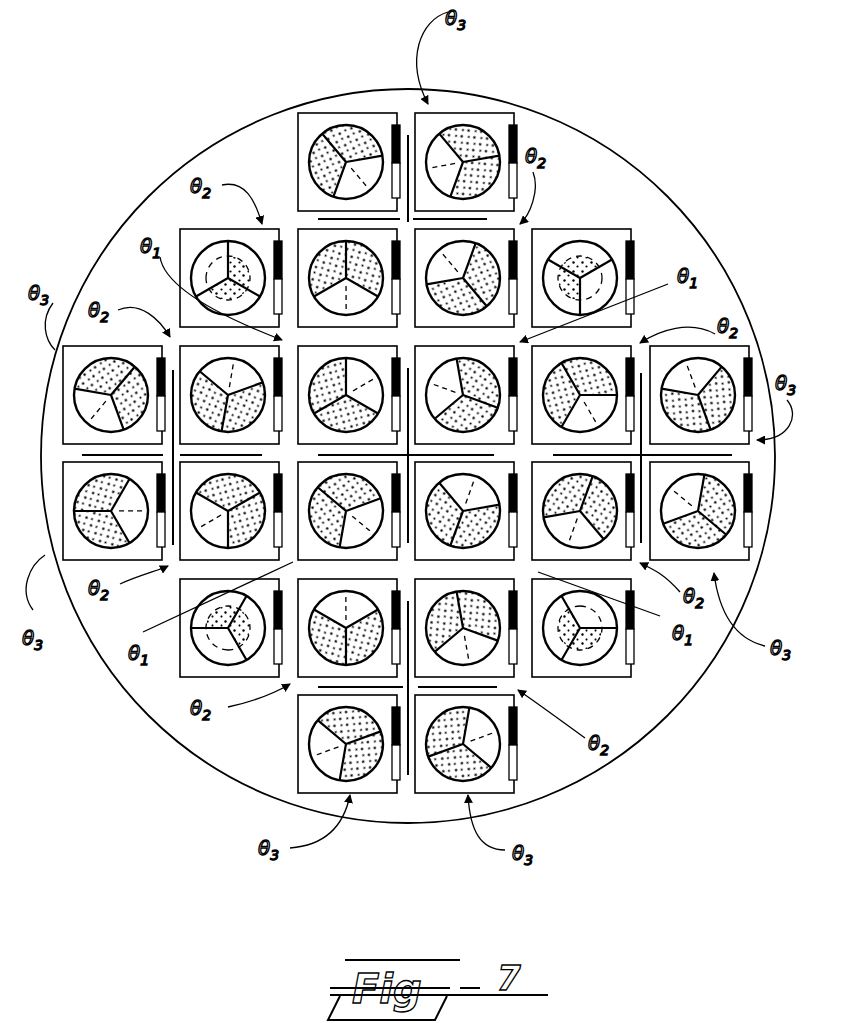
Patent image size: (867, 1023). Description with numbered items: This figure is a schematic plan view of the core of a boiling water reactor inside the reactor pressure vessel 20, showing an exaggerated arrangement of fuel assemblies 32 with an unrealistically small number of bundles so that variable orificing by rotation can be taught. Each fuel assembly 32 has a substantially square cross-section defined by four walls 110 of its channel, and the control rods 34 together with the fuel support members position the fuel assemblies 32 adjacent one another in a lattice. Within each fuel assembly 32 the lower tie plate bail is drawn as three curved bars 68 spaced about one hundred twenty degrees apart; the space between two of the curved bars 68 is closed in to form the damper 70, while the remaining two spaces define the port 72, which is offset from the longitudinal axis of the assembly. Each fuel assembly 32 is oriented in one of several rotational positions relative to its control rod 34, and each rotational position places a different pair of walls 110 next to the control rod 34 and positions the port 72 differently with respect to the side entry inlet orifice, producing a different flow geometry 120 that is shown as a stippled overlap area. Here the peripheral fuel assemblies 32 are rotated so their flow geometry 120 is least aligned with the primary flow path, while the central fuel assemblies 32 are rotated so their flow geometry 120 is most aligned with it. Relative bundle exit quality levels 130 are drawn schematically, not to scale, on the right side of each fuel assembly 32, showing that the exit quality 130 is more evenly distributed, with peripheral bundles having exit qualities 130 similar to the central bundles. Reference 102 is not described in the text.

The reactor pressure vessel 20 is at (110, 112).
The fuel assembly 32 is at (600, 690).
The control rod 34 is at (412, 138).
The curved bar 68 is at (340, 130).
The damper 70 is at (376, 182).
The port 72 is at (318, 148).
The third region of die 102 is at (360, 135).
The wall 110 is at (610, 230).
The flow geometry 120 is at (412, 793).
The bundle exit quality level 130 is at (518, 775).